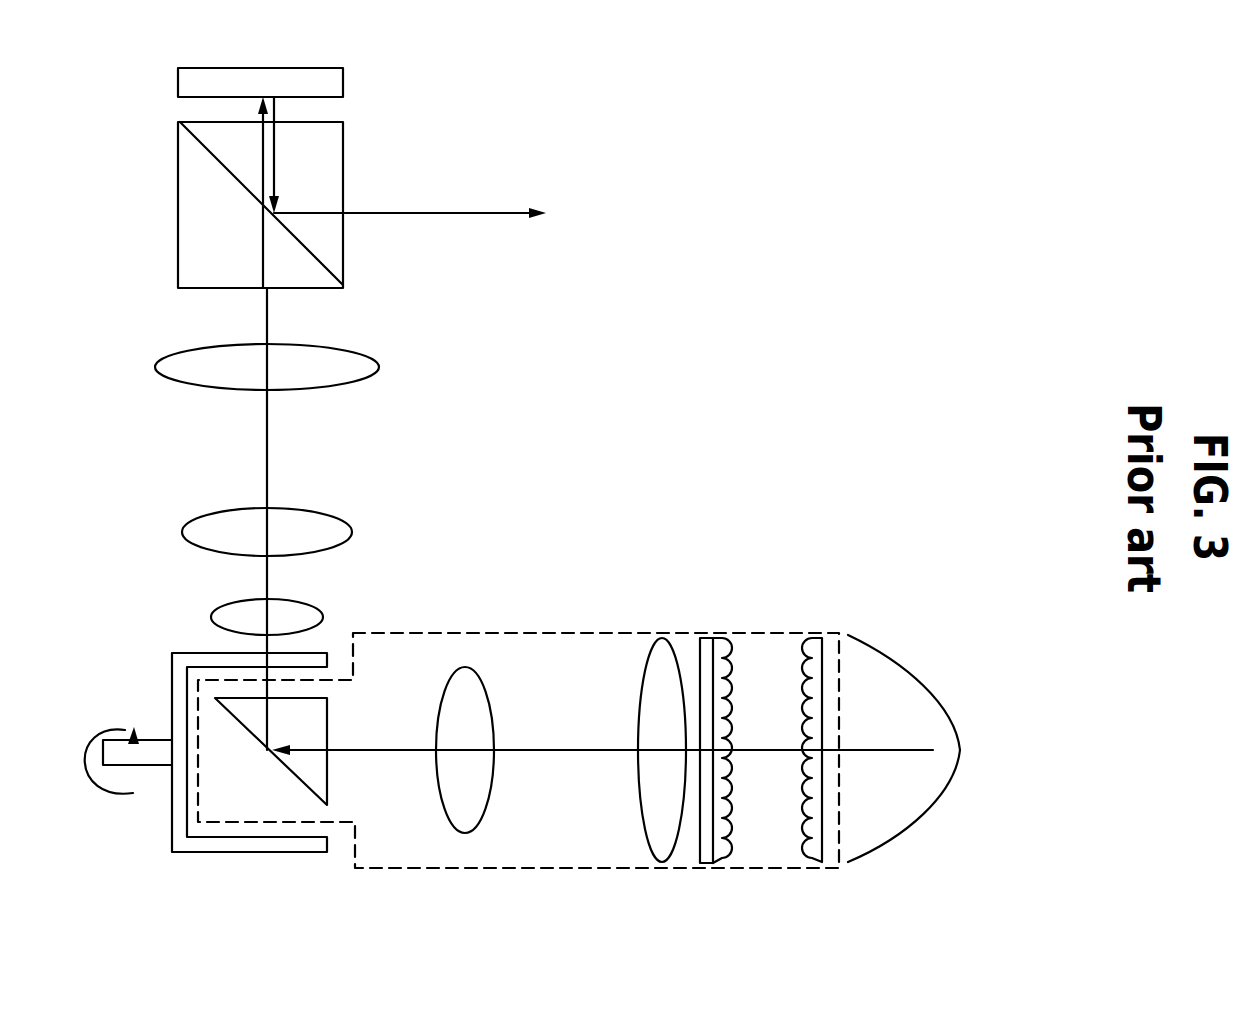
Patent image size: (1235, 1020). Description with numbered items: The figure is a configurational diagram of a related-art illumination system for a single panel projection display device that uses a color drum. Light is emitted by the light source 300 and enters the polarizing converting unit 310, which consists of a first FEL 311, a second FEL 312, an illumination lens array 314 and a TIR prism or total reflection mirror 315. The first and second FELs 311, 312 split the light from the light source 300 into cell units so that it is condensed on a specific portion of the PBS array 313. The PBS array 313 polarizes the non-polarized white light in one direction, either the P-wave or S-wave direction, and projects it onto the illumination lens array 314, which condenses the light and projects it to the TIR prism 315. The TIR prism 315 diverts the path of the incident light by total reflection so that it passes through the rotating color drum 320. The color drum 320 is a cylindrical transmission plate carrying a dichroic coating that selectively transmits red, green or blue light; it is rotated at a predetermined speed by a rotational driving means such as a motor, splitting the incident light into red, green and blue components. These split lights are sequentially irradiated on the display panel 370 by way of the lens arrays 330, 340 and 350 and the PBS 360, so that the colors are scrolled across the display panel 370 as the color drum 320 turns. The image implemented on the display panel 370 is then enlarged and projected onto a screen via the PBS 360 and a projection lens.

The light source 300 is at (900, 672).
The polarizing converting unit 310 is at (612, 633).
The first FEL 311 is at (807, 865).
The second FEL 312 is at (726, 865).
The PBS array 313 is at (700, 858).
The illumination lens array 314 is at (466, 828).
The TIR prism 315 is at (327, 708).
The color drum 320 is at (206, 752).
The lens array 330 is at (213, 617).
The lens array 340 is at (183, 532).
The lens array 350 is at (156, 367).
The PBS 360 is at (178, 213).
The display panel 370 is at (178, 82).